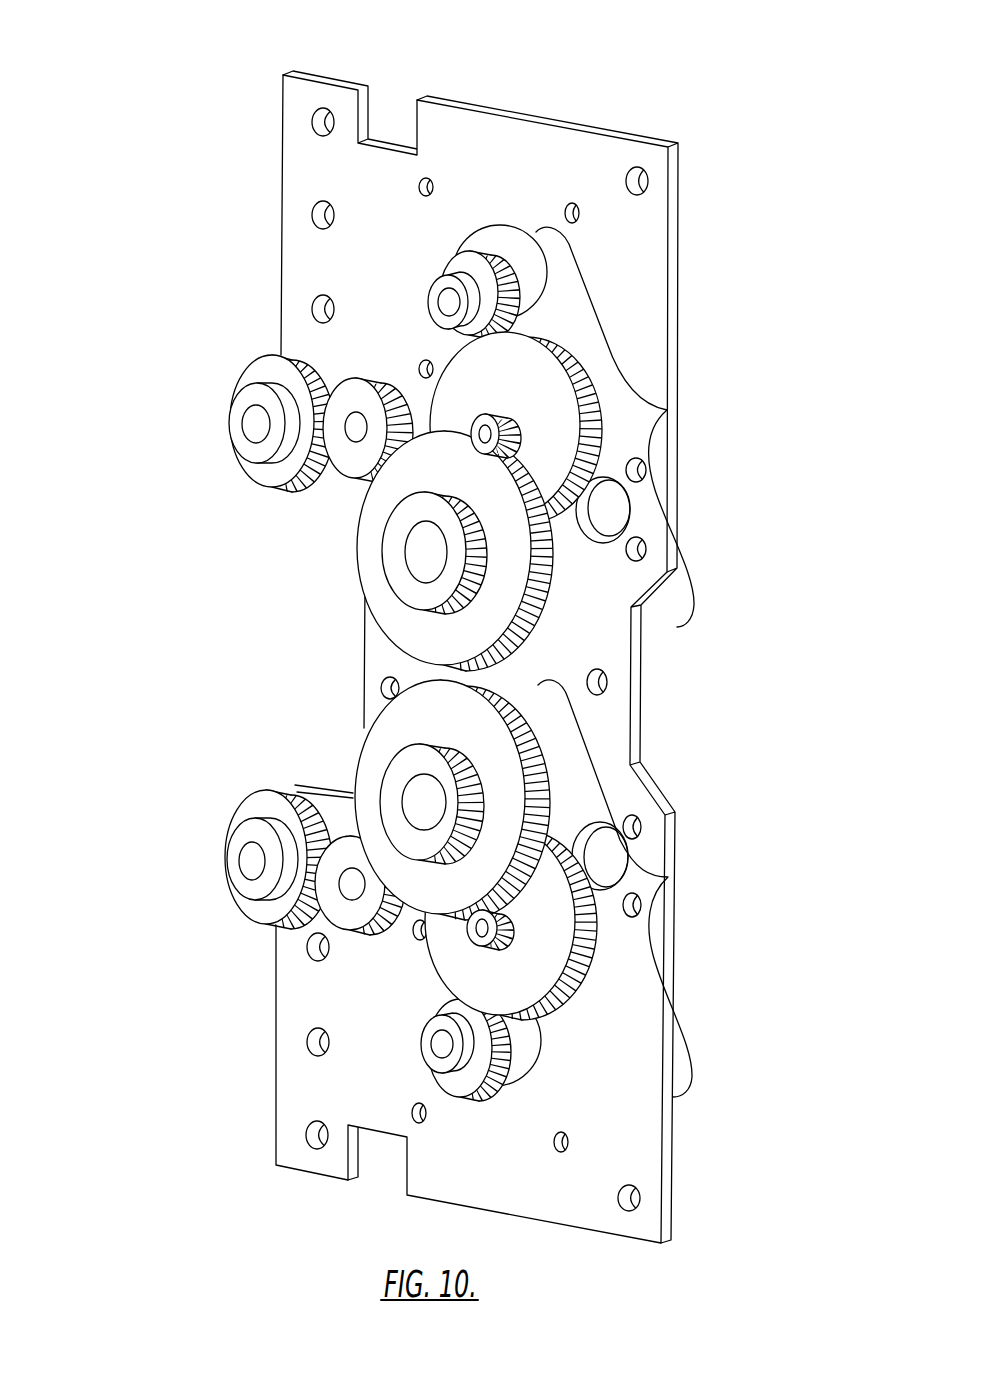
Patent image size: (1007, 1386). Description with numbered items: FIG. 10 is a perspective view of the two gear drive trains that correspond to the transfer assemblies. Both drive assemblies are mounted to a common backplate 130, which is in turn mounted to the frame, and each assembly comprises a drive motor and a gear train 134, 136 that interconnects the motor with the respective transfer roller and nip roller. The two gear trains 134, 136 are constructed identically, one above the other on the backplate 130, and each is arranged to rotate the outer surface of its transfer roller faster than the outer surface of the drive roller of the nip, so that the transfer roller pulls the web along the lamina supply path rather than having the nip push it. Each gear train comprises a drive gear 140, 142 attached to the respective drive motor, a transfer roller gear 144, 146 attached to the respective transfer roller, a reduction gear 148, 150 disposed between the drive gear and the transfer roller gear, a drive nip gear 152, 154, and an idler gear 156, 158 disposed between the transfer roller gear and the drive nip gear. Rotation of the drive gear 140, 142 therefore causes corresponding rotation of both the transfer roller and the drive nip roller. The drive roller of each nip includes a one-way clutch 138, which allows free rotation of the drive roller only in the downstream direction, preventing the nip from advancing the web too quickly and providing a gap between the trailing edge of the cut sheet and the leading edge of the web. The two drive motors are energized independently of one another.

The backplate 130 is at (652, 265).
The gear train 134 is at (692, 388).
The gear train 136 is at (692, 873).
The one-way clutch 138 is at (243, 399).
The drive gear 140 is at (482, 253).
The drive gear 142 is at (505, 1058).
The transfer roller gear 144 is at (513, 585).
The transfer roller gear 146 is at (507, 767).
The reduction gear 148 is at (538, 383).
The reduction gear 150 is at (547, 950).
The drive nip gear 152 is at (263, 362).
The drive nip gear 154 is at (248, 810).
The idler gear 156 is at (355, 393).
The idler gear 158 is at (345, 915).